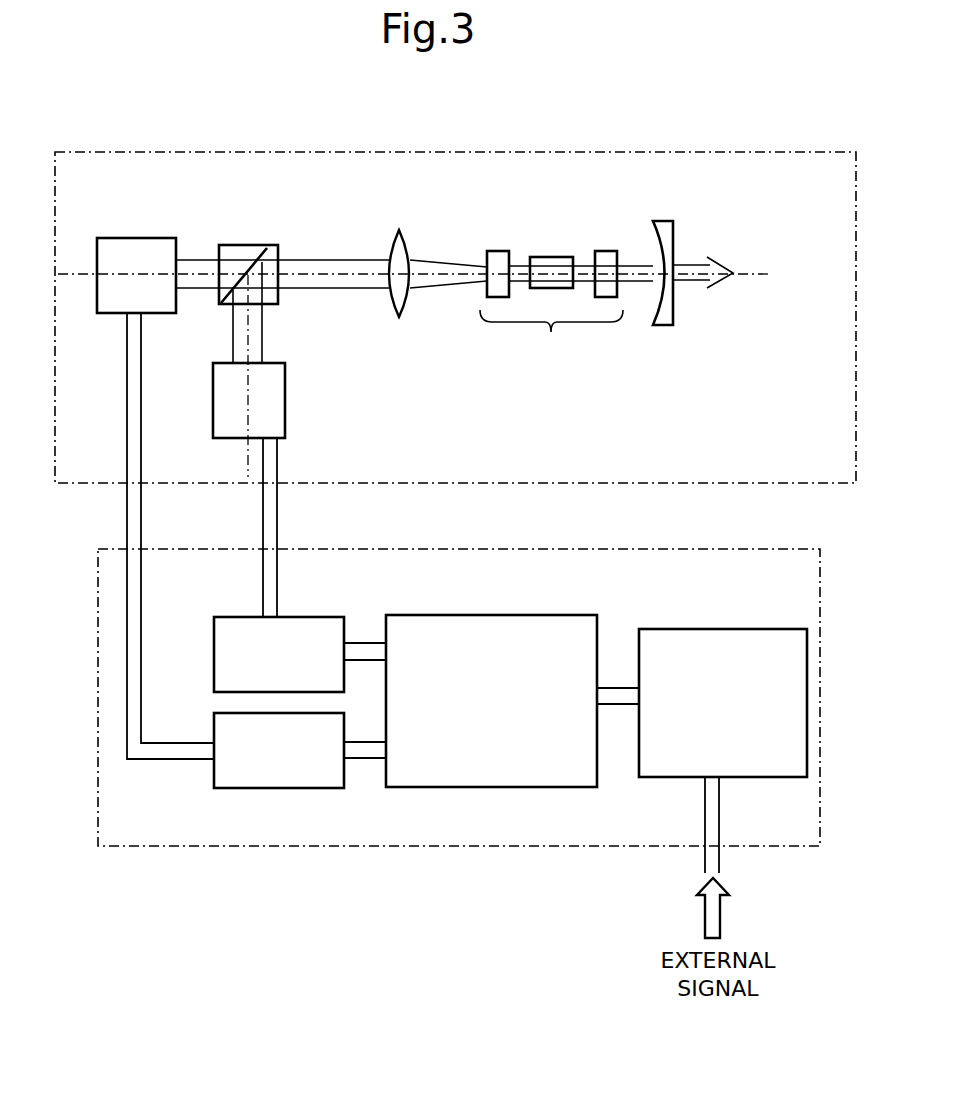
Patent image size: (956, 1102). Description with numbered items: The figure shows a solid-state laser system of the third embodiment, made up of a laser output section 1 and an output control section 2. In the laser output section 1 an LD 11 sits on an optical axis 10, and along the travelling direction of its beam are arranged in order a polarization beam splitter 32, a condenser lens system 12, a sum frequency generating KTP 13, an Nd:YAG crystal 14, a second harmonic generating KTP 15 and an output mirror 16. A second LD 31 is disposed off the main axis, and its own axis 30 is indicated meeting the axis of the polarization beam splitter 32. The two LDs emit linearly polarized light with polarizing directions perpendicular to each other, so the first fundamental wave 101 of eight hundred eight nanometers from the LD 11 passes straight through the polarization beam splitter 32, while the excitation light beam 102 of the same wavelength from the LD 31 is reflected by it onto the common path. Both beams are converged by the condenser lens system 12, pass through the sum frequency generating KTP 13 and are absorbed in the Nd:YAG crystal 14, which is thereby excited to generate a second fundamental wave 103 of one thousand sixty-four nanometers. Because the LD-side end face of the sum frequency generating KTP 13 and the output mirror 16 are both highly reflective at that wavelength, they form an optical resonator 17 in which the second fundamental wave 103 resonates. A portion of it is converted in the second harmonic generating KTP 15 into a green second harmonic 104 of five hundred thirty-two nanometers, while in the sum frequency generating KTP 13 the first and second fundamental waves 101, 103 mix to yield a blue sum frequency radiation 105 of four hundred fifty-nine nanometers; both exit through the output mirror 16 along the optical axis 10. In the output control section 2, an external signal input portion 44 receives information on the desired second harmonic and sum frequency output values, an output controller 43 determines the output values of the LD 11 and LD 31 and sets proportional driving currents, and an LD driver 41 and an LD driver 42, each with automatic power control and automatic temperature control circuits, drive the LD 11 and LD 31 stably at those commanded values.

The laser output section 1 is at (379, 177).
The output control section 2 is at (450, 567).
The optical axis 10 is at (78, 275).
The LD 11 is at (132, 250).
The condenser lens system 12 is at (400, 248).
The sum frequency generating KTP 13 is at (493, 287).
The Nd:YAG crystal 14 is at (549, 257).
The second harmonic generating KTP 15 is at (603, 260).
The output mirror 16 is at (663, 323).
The optical resonator 17 is at (551, 337).
The optical axis of second laser 30 is at (245, 463).
The LD 31 is at (263, 405).
The polarization beam splitter 32 is at (245, 250).
The LD driver 41 is at (280, 777).
The LD driver 42 is at (318, 635).
The output controller 43 is at (510, 632).
The external signal input portion 44 is at (700, 640).
The first fundamental wave 101 is at (195, 282).
The excitation light beam 102 is at (255, 330).
The second fundamental wave 103 is at (632, 262).
The second harmonic 104 is at (756, 314).
The sum frequency radiation 105 is at (695, 278).